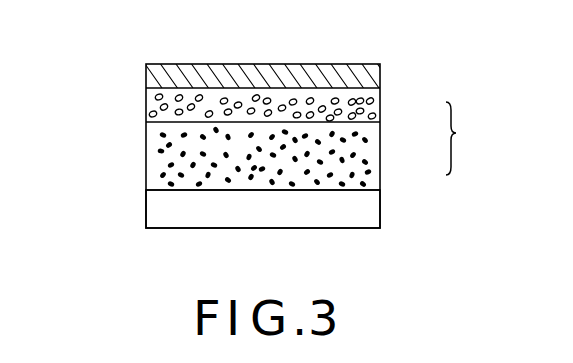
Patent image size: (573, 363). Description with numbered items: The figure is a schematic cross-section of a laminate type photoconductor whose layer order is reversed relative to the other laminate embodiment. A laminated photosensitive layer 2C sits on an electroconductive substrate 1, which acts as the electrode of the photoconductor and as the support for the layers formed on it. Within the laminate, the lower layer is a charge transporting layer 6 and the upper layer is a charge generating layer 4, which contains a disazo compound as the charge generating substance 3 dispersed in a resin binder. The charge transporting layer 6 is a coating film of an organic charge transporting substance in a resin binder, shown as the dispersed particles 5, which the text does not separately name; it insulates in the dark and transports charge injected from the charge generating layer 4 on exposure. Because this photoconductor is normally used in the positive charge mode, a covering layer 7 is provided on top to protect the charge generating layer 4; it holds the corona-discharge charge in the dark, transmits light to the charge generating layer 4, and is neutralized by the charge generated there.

The electroconductive substrate 1 is at (368, 212).
The laminated photosensitive layer 2C is at (468, 138).
The charge generating substance 3 is at (156, 98).
The charge generating layer 4 is at (369, 108).
The second particles 5 is at (159, 152).
The charge transporting layer 6 is at (366, 149).
The covering layer 7 is at (367, 77).